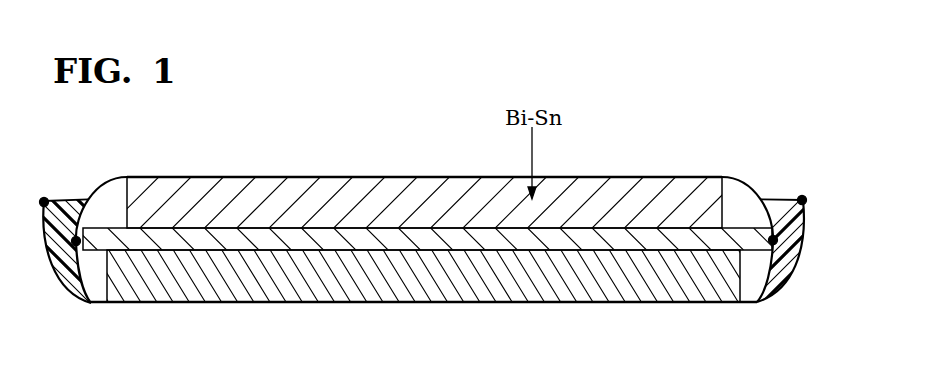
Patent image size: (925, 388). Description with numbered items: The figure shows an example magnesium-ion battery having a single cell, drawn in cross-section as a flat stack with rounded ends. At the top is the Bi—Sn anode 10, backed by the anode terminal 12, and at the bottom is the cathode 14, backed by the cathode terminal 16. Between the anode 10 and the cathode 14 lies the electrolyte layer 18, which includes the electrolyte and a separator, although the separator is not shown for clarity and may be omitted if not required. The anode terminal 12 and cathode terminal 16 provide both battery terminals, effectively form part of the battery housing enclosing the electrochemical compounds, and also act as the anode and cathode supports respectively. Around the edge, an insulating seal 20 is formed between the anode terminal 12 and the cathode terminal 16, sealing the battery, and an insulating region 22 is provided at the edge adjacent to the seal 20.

The Bi—Sn anode 10 is at (655, 190).
The anode terminal 12 is at (375, 177).
The cathode 14 is at (587, 287).
The cathode terminal 16 is at (466, 302).
The electrolyte layer 18 is at (108, 238).
The insulating seal 20 is at (782, 252).
The insulating region 22 is at (752, 275).